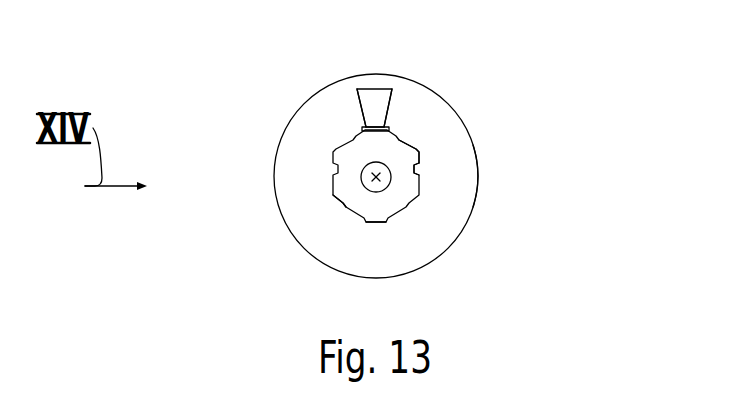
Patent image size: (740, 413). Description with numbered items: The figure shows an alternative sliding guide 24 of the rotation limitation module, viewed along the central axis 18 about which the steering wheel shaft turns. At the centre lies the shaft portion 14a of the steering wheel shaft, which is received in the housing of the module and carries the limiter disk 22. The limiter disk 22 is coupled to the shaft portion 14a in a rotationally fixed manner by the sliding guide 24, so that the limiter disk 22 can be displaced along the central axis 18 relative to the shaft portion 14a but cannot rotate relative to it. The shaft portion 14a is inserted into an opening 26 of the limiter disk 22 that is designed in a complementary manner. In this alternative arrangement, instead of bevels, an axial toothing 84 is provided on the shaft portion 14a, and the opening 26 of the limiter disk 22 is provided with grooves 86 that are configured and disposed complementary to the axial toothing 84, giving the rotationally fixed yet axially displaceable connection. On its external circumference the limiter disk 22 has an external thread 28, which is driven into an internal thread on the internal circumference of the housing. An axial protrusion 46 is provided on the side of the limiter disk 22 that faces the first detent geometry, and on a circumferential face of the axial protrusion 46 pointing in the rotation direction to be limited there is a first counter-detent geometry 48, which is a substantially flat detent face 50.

The shaft portion 14a is at (390, 153).
The central axis 18 is at (376, 177).
The limiter disk 22 is at (442, 223).
The sliding guide 24 is at (340, 137).
The opening 26 is at (428, 162).
The external thread 28 is at (482, 175).
The axial protrusion 46 is at (376, 103).
The first counter-detent geometry 48 is at (352, 105).
The detent face 50 is at (388, 108).
The axial toothing 84 is at (326, 204).
The grooves 86 is at (370, 222).